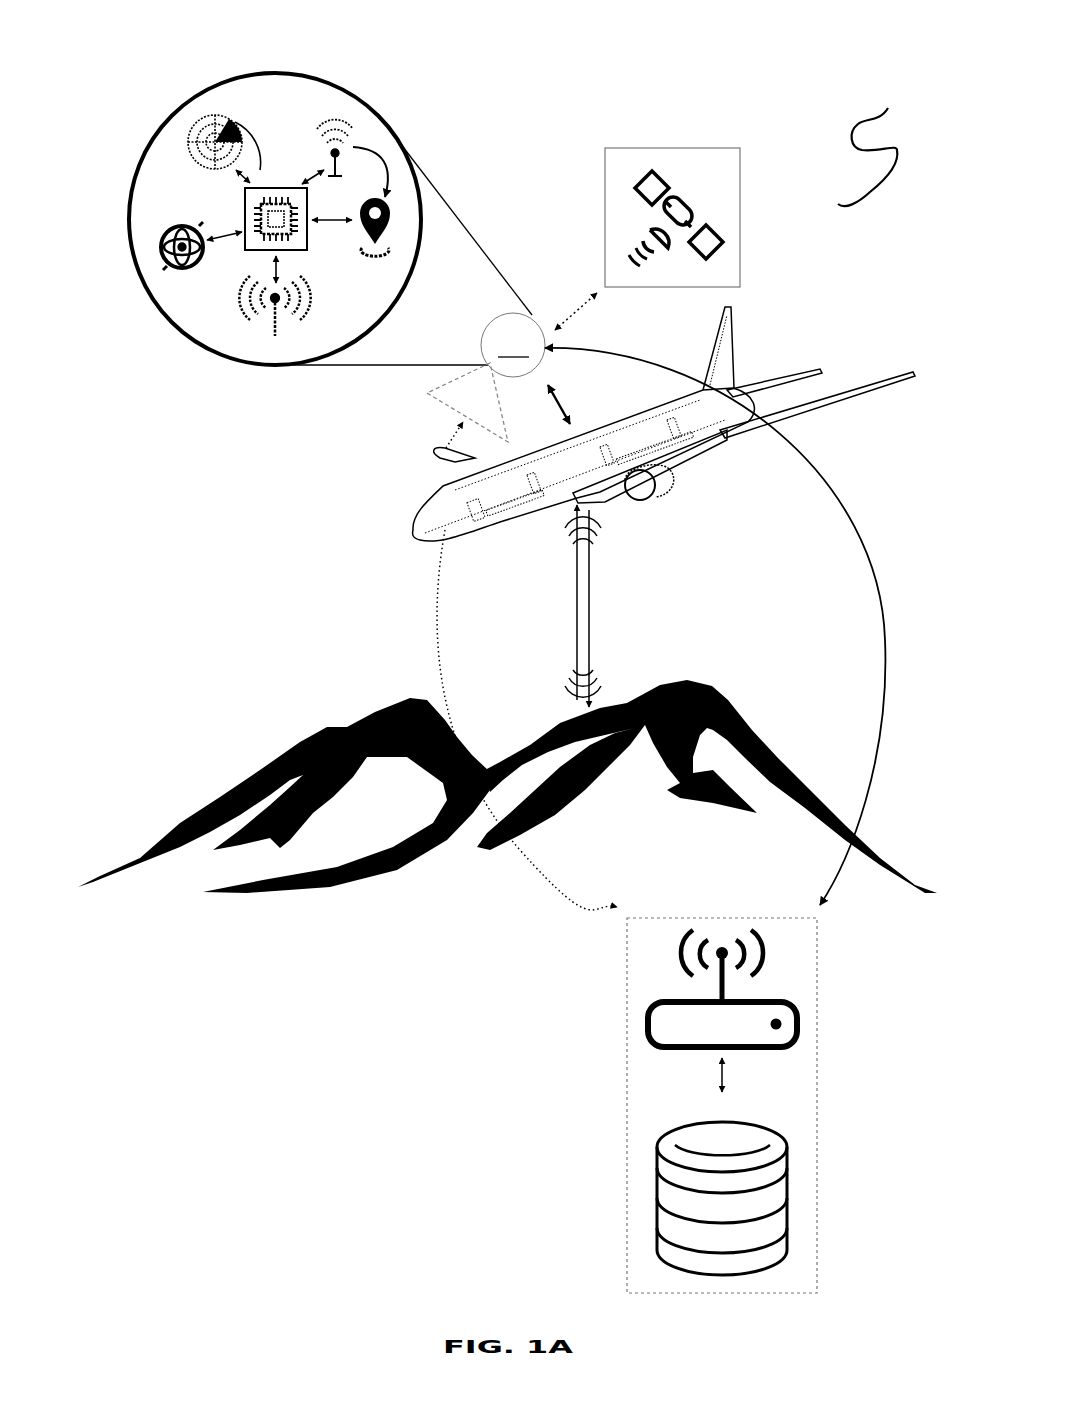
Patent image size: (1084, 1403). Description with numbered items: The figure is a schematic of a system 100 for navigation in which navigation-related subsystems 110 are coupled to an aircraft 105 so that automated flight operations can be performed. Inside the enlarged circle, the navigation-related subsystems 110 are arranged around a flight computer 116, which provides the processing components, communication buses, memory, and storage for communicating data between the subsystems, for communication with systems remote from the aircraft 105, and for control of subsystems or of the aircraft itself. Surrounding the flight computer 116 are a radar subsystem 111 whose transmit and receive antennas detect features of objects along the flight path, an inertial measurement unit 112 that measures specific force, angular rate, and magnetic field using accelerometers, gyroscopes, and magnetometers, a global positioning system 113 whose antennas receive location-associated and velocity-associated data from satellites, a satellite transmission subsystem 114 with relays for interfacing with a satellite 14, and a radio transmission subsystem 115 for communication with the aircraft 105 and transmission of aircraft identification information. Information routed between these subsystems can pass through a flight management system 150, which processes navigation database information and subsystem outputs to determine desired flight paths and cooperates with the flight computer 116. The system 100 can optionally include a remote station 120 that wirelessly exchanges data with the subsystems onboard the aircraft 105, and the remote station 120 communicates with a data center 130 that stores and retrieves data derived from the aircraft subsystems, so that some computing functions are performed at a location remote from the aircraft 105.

The system for navigation 100 is at (896, 133).
The navigation-related subsystems 110 is at (276, 83).
The radar subsystem 111 is at (212, 117).
The inertial measurement unit 112 is at (160, 243).
The global positioning system 113 is at (387, 237).
The satellite transmission subsystem 114 is at (346, 125).
The radio transmission subsystem 115 is at (270, 332).
The flight computer 116 is at (245, 248).
The satellite 14 is at (622, 233).
The flight management system 150 is at (467, 405).
The aircraft 105 is at (653, 487).
The remote station 120 is at (797, 1018).
The data center 130 is at (777, 1203).